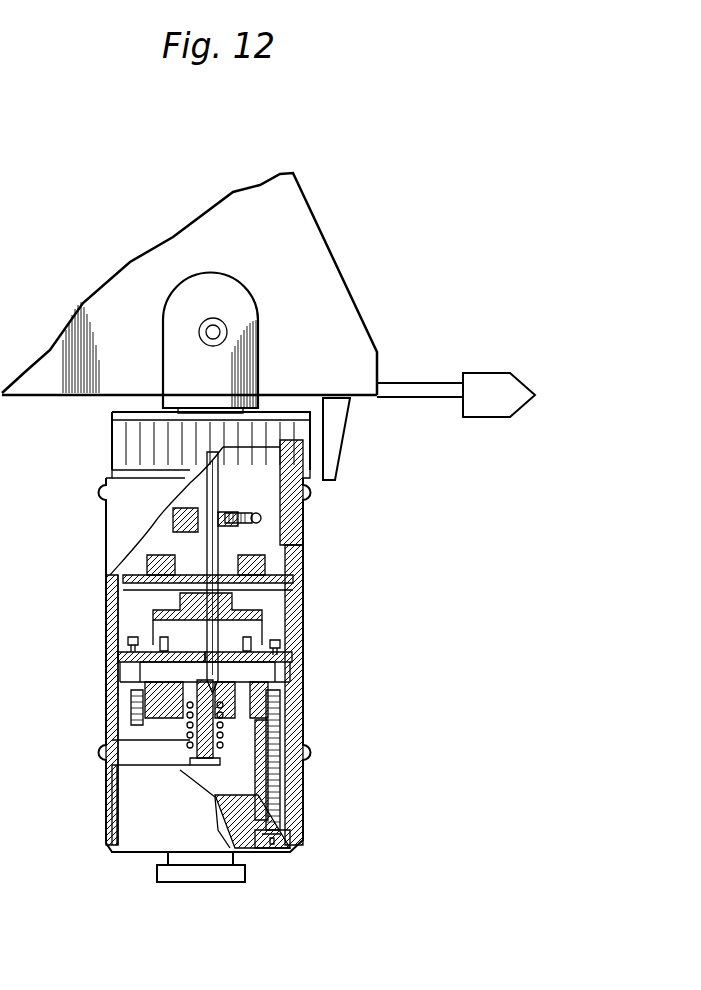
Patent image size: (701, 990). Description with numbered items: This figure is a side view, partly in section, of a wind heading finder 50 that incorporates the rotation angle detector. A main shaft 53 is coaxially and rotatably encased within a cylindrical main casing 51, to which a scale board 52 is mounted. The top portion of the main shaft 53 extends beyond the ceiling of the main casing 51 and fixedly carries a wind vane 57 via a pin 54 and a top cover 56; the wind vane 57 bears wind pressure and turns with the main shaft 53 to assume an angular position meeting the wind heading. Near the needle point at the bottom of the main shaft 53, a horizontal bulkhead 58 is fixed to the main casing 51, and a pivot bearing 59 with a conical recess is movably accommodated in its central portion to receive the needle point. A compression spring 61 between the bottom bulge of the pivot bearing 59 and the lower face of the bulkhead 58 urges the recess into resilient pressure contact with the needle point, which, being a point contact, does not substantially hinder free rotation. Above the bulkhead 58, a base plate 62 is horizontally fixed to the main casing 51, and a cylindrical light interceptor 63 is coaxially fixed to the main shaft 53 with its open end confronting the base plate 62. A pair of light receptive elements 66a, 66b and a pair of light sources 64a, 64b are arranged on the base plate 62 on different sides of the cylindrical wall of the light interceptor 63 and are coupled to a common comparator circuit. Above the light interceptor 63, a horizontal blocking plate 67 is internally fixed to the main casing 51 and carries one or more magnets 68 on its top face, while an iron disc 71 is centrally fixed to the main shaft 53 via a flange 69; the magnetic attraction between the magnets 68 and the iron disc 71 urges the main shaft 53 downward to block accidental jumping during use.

The wind heading finder 50 is at (386, 538).
The main casing 51 is at (305, 490).
The scale board 52 is at (112, 438).
The main shaft 53 is at (207, 483).
The pin 54 is at (201, 322).
The top cover 56 is at (238, 308).
The wind vane 57 is at (308, 240).
The bulkhead 58 is at (138, 705).
The pivot bearing 59 is at (195, 740).
The compression spring 61 is at (205, 765).
The base plate 62 is at (145, 690).
The light interceptor 63 is at (155, 612).
The light source 64a is at (120, 656).
The light source 64b is at (292, 656).
The light receptive element 66a is at (128, 640).
The light receptive element 66b is at (278, 640).
The blocking plate 67 is at (125, 580).
The magnet 68 is at (150, 562).
The flange 69 is at (176, 525).
The iron disc 71 is at (305, 522).